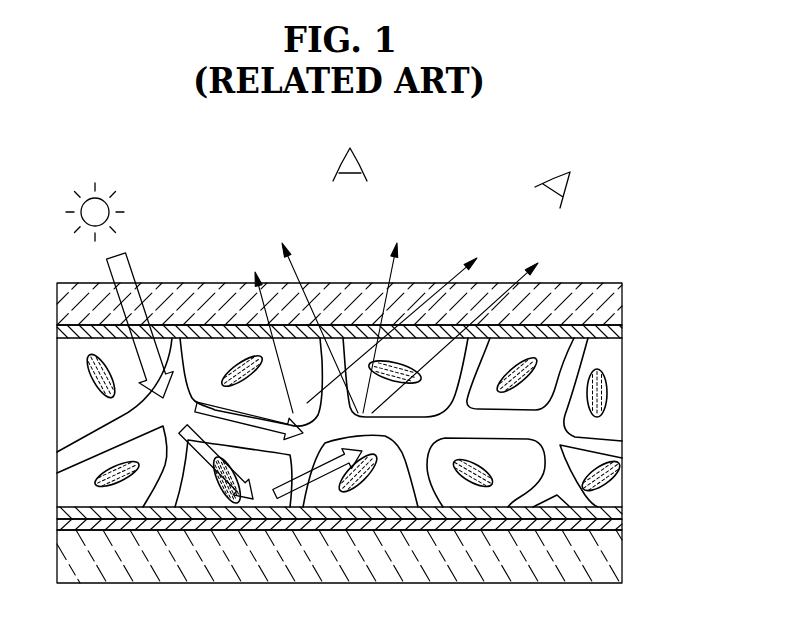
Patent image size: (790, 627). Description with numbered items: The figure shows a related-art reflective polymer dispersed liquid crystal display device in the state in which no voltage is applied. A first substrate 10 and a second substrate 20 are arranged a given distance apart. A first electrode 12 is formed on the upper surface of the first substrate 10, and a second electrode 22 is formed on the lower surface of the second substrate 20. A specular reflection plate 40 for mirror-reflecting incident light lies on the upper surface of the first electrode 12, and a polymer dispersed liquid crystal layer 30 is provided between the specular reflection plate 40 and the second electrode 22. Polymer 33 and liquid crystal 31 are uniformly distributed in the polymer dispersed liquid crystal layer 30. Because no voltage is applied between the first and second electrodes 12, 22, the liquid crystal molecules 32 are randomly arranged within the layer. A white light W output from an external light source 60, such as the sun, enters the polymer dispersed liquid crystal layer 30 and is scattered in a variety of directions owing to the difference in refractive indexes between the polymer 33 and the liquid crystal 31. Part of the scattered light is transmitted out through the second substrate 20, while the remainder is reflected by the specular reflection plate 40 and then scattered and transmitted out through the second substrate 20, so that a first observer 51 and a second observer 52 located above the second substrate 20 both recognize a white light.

The first substrate 10 is at (622, 557).
The first electrode 12 is at (622, 526).
The second substrate 20 is at (622, 304).
The second electrode 22 is at (622, 332).
The polymer dispersed liquid crystal layer 30 is at (398, 422).
The liquid crystal 31 is at (618, 365).
The liquid crystal molecules 32 is at (605, 397).
The polymer 33 is at (618, 452).
The specular reflection plate 40 is at (622, 513).
The first observer 51 is at (364, 158).
The second observer 52 is at (572, 190).
The external light source 60 is at (108, 189).
The white light W is at (127, 270).